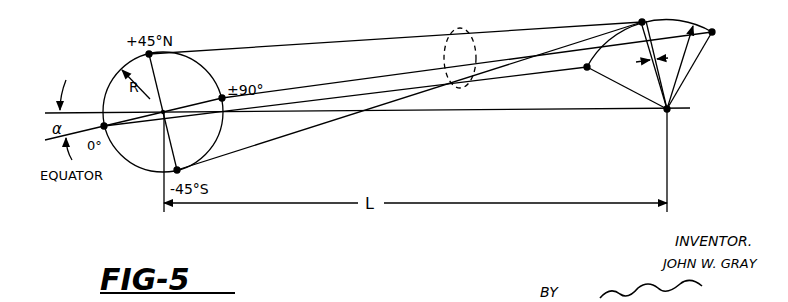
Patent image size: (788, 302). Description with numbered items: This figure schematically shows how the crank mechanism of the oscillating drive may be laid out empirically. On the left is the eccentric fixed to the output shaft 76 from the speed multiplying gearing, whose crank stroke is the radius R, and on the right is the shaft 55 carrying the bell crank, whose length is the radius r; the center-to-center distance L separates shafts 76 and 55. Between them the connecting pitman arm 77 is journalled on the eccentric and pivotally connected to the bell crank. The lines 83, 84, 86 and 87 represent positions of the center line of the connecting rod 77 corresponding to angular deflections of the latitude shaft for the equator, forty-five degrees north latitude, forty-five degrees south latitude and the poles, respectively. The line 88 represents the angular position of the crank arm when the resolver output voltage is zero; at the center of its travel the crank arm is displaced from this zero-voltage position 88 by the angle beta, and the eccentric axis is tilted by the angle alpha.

The shaft 55 is at (667, 111).
The output shaft 76 is at (165, 109).
The connecting pitman arm 77 is at (466, 86).
The line 83 is at (566, 70).
The line 84 is at (527, 30).
The line 86 is at (302, 135).
The line 87 is at (352, 81).
The line 88 is at (643, 59).